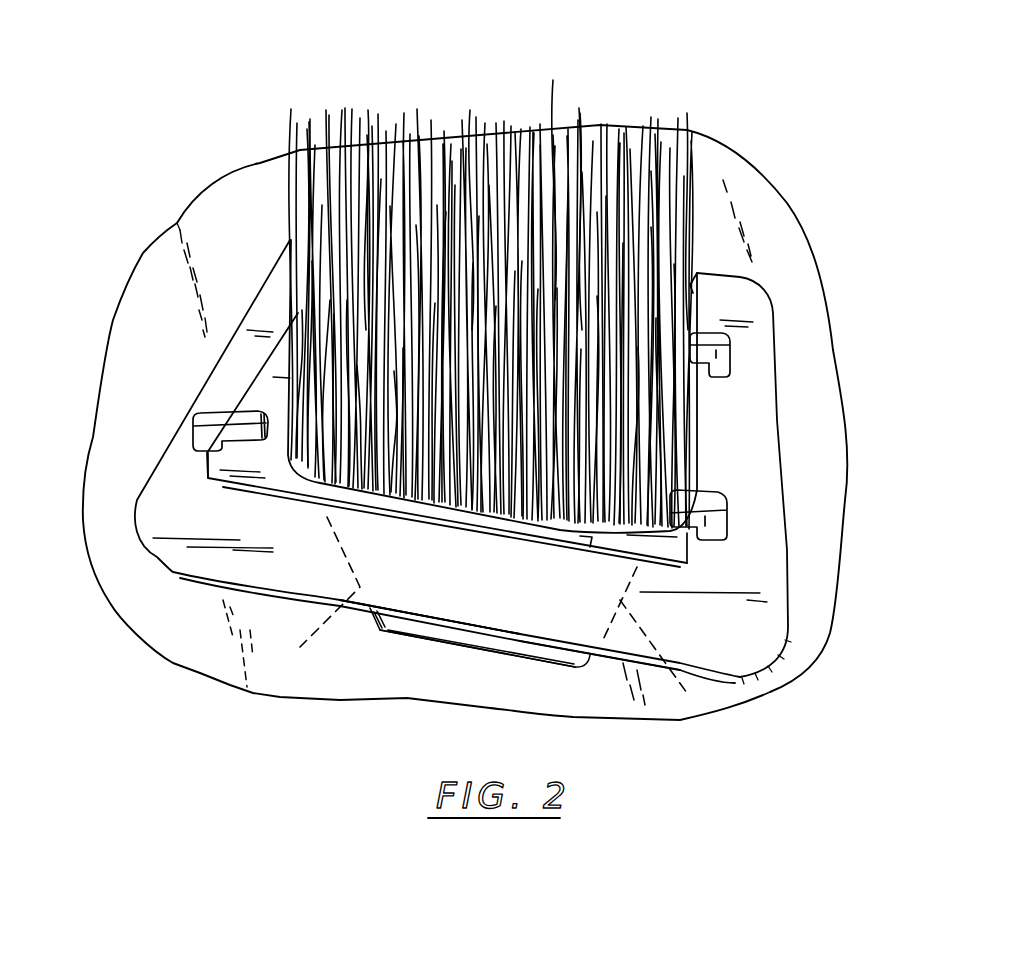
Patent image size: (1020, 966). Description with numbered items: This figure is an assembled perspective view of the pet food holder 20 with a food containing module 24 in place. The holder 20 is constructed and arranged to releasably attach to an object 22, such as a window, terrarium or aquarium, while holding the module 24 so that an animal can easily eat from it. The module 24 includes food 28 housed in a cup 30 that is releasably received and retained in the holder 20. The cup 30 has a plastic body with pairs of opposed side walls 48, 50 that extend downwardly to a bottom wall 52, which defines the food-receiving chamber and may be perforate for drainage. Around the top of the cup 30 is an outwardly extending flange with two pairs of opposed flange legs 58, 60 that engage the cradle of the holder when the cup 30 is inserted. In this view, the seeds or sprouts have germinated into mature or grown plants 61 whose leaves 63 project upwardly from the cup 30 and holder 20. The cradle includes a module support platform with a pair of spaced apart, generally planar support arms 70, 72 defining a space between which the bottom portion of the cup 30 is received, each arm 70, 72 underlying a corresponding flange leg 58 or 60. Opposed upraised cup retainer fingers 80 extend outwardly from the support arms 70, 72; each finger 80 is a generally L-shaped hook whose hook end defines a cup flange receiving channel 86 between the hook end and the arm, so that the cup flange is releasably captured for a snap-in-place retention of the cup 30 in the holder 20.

The pet food holder 20 is at (797, 263).
The object 22 is at (177, 223).
The food containing module 24 is at (583, 678).
The food 28 is at (432, 90).
The cup 30 is at (388, 645).
The side wall 48 is at (498, 634).
The side wall 50 is at (447, 633).
The bottom wall 52 is at (486, 650).
The flange leg 58 is at (263, 394).
The flange leg 60 is at (590, 547).
The grown plant 61 is at (553, 80).
The leaves 63 is at (368, 110).
The support arm 70 is at (767, 425).
The support arm 72 is at (232, 358).
The cup retainer finger 80 is at (190, 429).
The cup flange receiving channel 86 is at (233, 443).